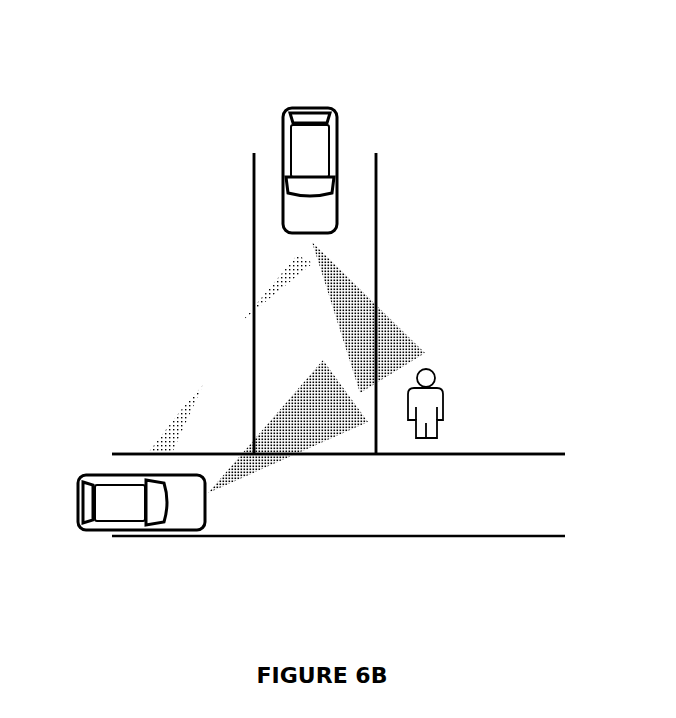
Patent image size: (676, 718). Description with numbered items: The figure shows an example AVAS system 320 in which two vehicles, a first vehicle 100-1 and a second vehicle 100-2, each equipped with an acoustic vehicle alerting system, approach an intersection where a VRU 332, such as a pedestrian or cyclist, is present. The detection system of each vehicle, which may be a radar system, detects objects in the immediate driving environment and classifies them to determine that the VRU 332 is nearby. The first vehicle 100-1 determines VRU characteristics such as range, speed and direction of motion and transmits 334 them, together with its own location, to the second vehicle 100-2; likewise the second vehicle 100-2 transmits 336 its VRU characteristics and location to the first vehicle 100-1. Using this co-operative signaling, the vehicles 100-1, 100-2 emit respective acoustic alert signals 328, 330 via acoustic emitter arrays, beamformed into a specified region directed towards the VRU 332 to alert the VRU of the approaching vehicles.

The first vehicle 100-1 is at (312, 100).
The second vehicle 100-2 is at (123, 473).
The AVAS system 320 is at (307, 612).
The acoustic alert signal 328 is at (411, 328).
The acoustic alert signal 330 is at (288, 398).
The VRU 332 is at (427, 369).
The transmission of VRU characteristics from the first vehicle 334 is at (270, 287).
The transmission of VRU characteristics from the second vehicle 336 is at (162, 432).